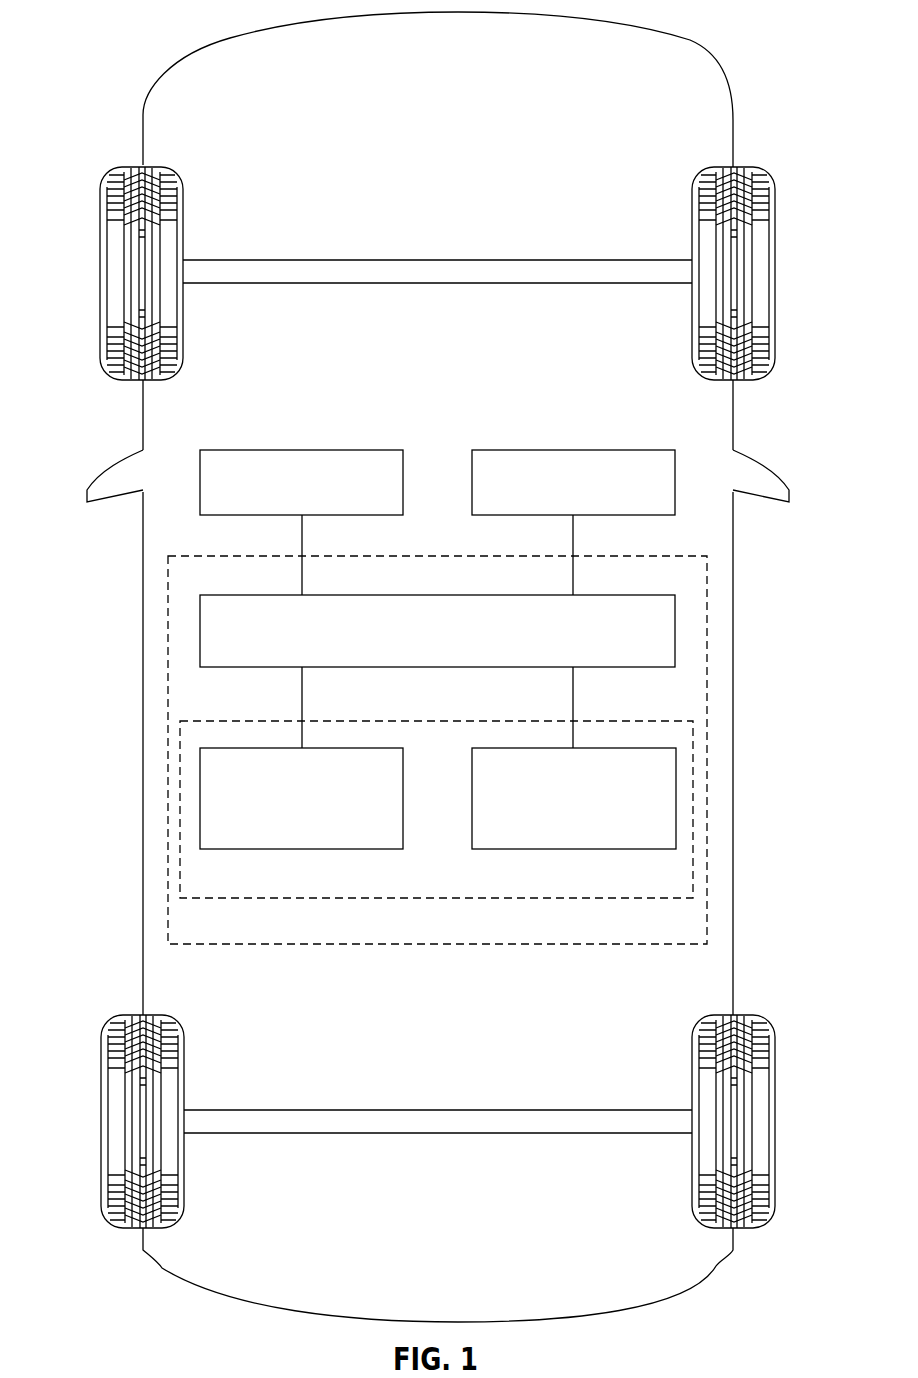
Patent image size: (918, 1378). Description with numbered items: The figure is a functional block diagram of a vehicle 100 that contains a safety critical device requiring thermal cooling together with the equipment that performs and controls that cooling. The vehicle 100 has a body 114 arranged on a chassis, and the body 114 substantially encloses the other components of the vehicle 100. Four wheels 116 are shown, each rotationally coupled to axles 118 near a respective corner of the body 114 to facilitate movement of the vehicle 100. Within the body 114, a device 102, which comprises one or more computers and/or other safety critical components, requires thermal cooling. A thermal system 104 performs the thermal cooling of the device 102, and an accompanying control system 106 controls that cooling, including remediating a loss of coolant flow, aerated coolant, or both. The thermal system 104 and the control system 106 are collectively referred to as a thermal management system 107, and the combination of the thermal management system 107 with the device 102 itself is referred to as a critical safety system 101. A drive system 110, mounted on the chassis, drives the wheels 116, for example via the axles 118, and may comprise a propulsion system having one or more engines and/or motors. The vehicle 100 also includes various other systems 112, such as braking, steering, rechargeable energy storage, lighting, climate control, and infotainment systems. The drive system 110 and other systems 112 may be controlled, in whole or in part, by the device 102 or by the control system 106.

The vehicle 100 is at (148, 32).
The critical safety system 101 is at (218, 556).
The device 102 is at (625, 668).
The thermal system 104 is at (350, 850).
The control system 106 is at (622, 850).
The thermal management system 107 is at (247, 721).
The drive system 110 is at (357, 516).
The other systems 112 is at (622, 516).
The body 114 is at (143, 725).
The wheels 116 is at (100, 272).
The axles 118 is at (440, 285).